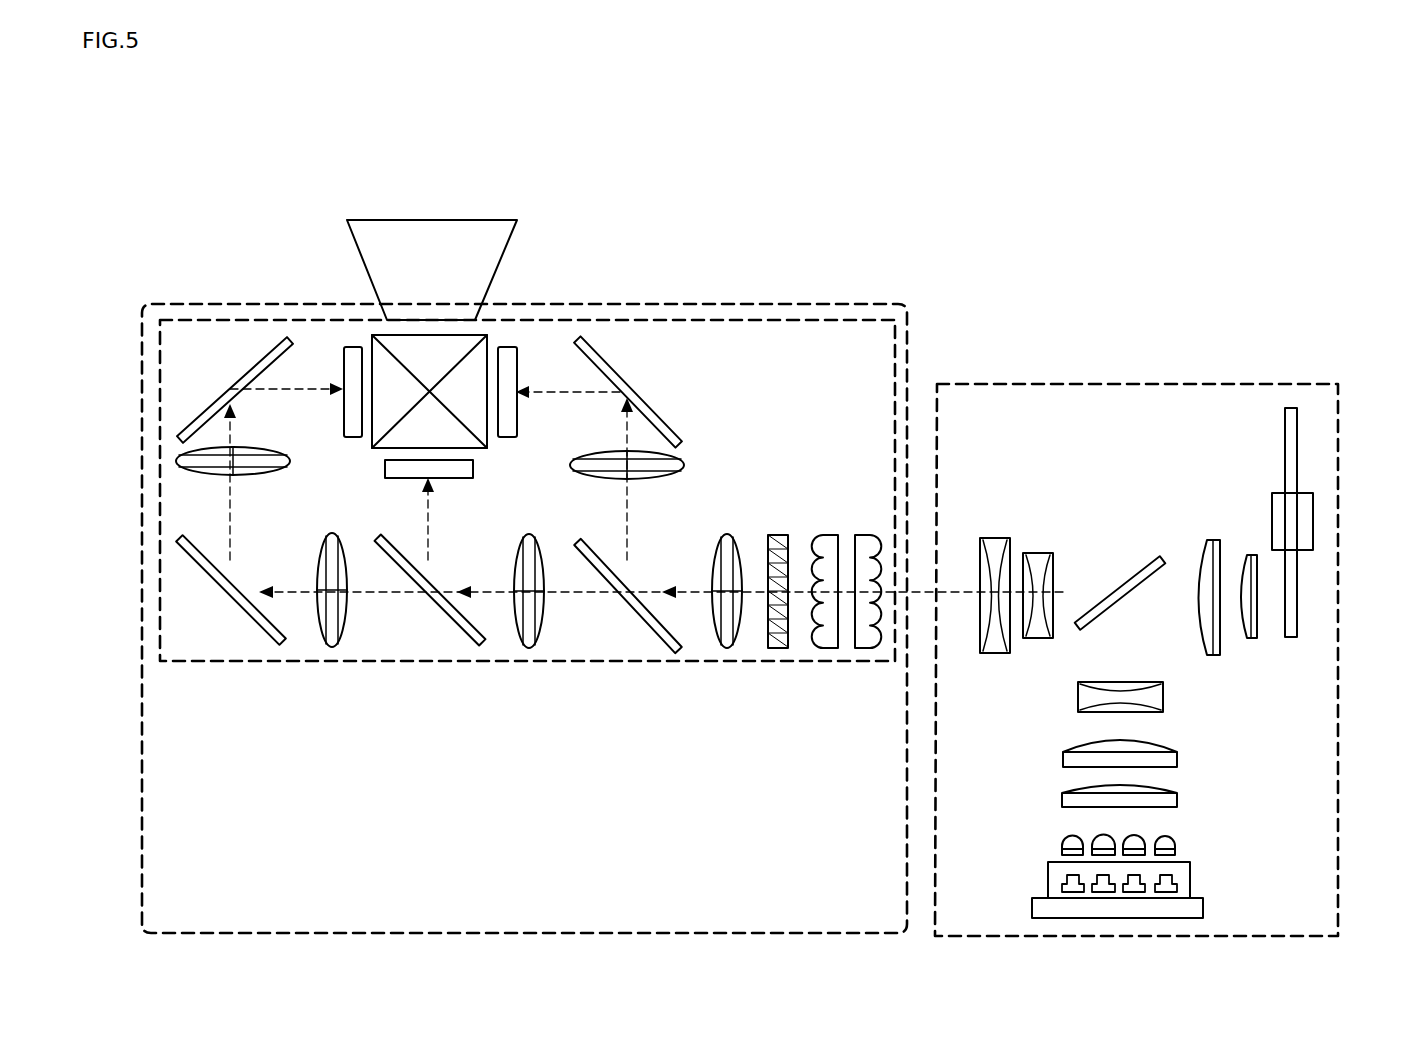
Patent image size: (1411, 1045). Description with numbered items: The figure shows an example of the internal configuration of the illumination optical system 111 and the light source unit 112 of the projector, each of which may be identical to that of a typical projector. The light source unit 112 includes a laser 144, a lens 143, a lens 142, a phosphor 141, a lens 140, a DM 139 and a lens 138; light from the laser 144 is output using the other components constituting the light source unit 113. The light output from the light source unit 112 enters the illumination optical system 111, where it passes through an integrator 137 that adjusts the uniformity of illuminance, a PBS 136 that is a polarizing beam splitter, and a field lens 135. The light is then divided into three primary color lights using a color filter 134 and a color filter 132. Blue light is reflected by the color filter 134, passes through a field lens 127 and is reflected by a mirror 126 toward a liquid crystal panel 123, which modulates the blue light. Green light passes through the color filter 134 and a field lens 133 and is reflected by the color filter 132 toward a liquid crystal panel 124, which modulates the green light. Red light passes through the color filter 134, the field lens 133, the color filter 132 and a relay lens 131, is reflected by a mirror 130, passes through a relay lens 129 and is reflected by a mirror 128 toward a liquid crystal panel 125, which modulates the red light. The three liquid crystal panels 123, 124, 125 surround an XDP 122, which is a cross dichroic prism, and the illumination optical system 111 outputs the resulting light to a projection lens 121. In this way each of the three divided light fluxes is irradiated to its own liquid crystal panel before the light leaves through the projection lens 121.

The illumination optical system 111 is at (353, 317).
The light source unit 112 is at (1247, 385).
The light source unit 113 is at (843, 310).
The projection lens 121 is at (487, 232).
The XDP 122 is at (477, 337).
The liquid crystal panel 123 is at (507, 363).
The liquid crystal panel 124 is at (413, 465).
The liquid crystal panel 125 is at (353, 363).
The mirror 126 is at (617, 363).
The field lens 127 is at (688, 457).
The mirror 128 is at (240, 367).
The relay lens 129 is at (177, 455).
The mirror 130 is at (183, 540).
The relay lens 131 is at (323, 537).
The color filter 132 is at (385, 540).
The field lens 133 is at (527, 535).
The color filter 134 is at (650, 630).
The field lens 135 is at (723, 537).
The PBS 136 is at (777, 650).
The integrator 137 is at (847, 657).
The lens 138 is at (1065, 538).
The DM 139 is at (1122, 583).
The lens 140 is at (1262, 538).
The phosphor 141 is at (1297, 600).
The lens 142 is at (1188, 817).
The lens 143 is at (1190, 843).
The laser 144 is at (1182, 890).